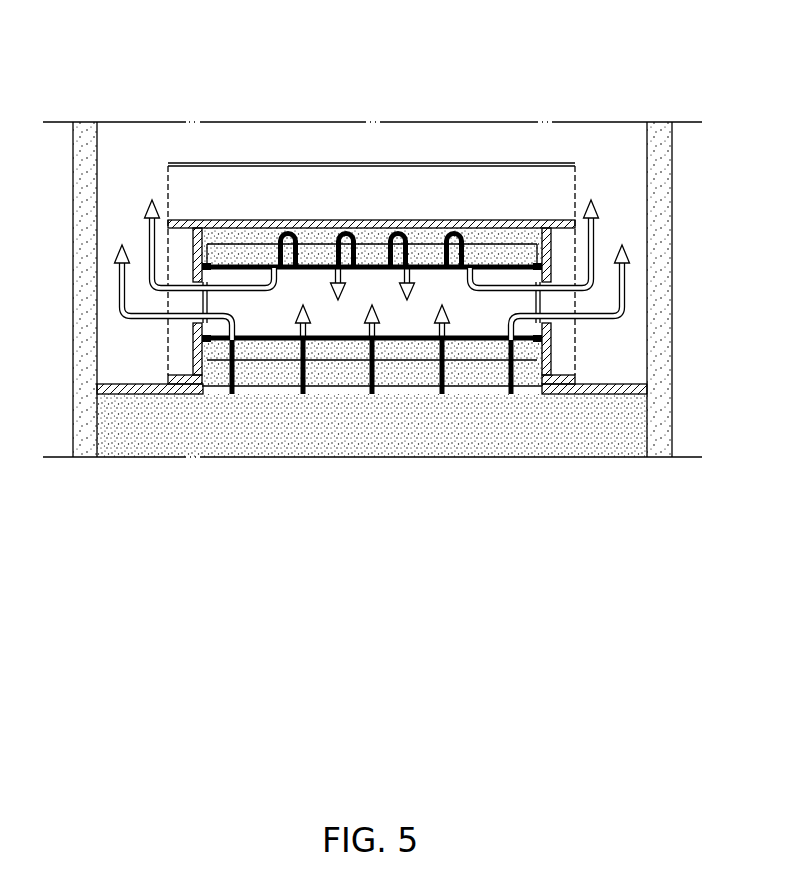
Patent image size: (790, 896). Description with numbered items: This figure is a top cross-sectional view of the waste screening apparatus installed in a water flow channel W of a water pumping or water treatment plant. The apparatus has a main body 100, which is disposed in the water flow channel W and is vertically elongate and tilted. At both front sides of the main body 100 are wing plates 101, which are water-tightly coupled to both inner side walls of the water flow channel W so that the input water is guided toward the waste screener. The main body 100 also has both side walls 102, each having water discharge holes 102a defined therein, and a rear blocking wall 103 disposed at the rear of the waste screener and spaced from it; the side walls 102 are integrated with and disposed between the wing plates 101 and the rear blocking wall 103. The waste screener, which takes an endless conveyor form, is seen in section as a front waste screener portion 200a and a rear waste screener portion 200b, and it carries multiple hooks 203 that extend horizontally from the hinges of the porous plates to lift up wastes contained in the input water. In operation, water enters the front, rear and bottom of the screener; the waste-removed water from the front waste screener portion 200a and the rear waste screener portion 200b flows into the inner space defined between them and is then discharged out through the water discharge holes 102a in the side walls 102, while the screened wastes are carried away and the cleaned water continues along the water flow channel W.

The main body 100 is at (172, 146).
The wing plates 101 is at (157, 394).
The side walls 102 is at (203, 376).
The water discharge holes 102a is at (197, 302).
The rear blocking wall 103 is at (309, 221).
The front waste screener portion 200a is at (345, 339).
The rear waste screener portion 200b is at (377, 262).
The hooks 203 is at (422, 242).
The water flow channel W is at (665, 453).